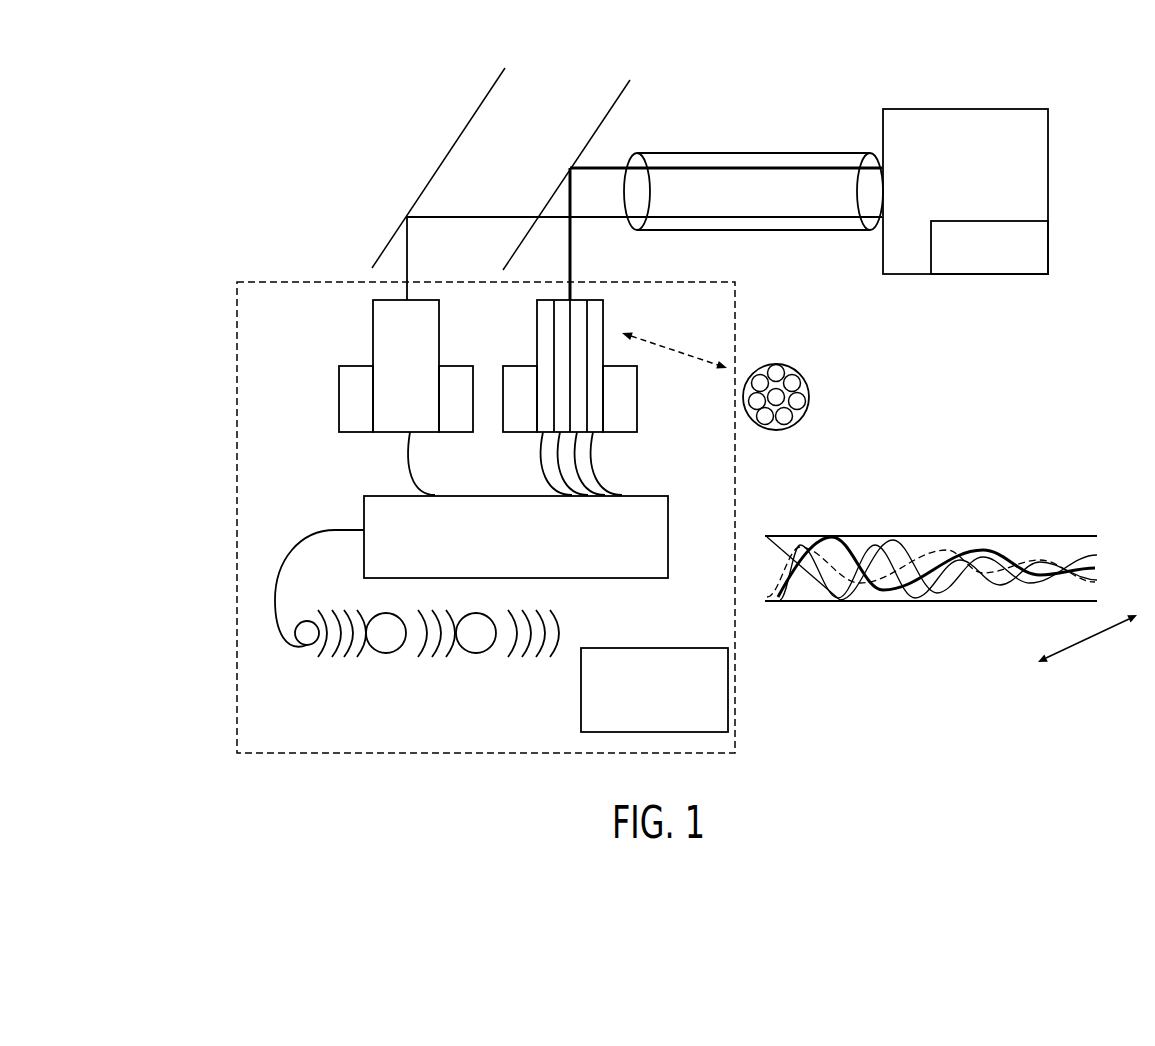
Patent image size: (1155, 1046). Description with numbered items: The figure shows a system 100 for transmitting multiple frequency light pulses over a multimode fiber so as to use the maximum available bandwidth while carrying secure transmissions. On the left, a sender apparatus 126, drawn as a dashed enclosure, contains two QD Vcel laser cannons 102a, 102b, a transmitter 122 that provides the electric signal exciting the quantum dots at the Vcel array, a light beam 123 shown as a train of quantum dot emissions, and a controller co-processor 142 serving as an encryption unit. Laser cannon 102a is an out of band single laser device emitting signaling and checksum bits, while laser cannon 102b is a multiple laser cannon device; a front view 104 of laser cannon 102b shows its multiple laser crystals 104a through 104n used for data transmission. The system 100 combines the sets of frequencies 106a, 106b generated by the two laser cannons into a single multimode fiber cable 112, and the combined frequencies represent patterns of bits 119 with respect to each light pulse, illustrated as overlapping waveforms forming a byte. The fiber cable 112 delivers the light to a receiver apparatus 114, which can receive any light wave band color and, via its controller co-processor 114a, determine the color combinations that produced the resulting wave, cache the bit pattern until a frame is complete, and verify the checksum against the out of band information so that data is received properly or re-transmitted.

The system 100 is at (322, 136).
The laser cannon 102a is at (373, 332).
The laser cannon 102b is at (535, 332).
The front view 104 is at (778, 372).
The laser crystal 104a is at (778, 370).
The laser crystal 104n is at (767, 423).
The set of frequencies 106a is at (407, 262).
The set of frequencies 106b is at (573, 263).
The fiber cable 112 is at (763, 152).
The receiver apparatus 114 is at (1043, 180).
The co-processor 114a is at (1045, 247).
The patterns of bits 119 is at (944, 512).
The transmitter 122 is at (613, 578).
The light beam 123 is at (436, 680).
The sender apparatus 126 is at (232, 520).
The controller co-processor 142 is at (728, 690).